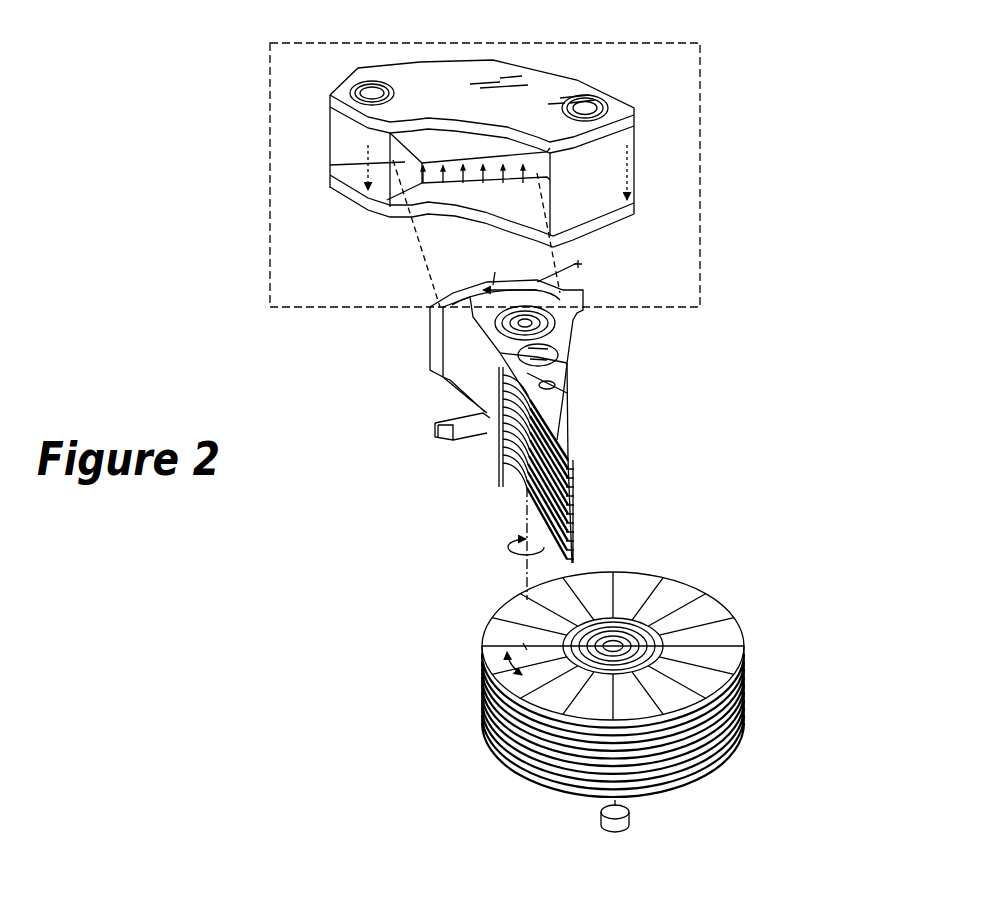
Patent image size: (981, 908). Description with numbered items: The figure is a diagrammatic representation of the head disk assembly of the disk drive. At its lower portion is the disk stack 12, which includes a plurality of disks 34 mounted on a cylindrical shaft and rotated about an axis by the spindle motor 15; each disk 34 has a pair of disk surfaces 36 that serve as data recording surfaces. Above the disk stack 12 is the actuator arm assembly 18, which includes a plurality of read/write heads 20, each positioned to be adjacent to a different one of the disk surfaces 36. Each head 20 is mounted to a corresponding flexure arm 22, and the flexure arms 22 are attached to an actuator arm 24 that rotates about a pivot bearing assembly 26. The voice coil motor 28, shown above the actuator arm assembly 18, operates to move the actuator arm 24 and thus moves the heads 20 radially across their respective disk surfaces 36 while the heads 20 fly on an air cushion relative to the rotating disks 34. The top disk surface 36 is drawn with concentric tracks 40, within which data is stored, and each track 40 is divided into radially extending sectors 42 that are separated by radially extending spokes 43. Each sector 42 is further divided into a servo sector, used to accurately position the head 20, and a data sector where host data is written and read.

The disk stack 12 is at (498, 580).
The spindle motor 15 is at (600, 818).
The actuator arm assembly 18 is at (616, 421).
The read/write head 20 is at (580, 467).
The flexure arm 22 is at (570, 422).
The actuator arm 24 is at (570, 366).
The pivot bearing assembly 26 is at (548, 322).
The voice coil motor 28 is at (700, 163).
The disks 34 is at (637, 777).
The disk surfaces 36 is at (730, 655).
The tracks 40 is at (633, 612).
The sectors 42 is at (505, 667).
The spokes 43 is at (523, 643).